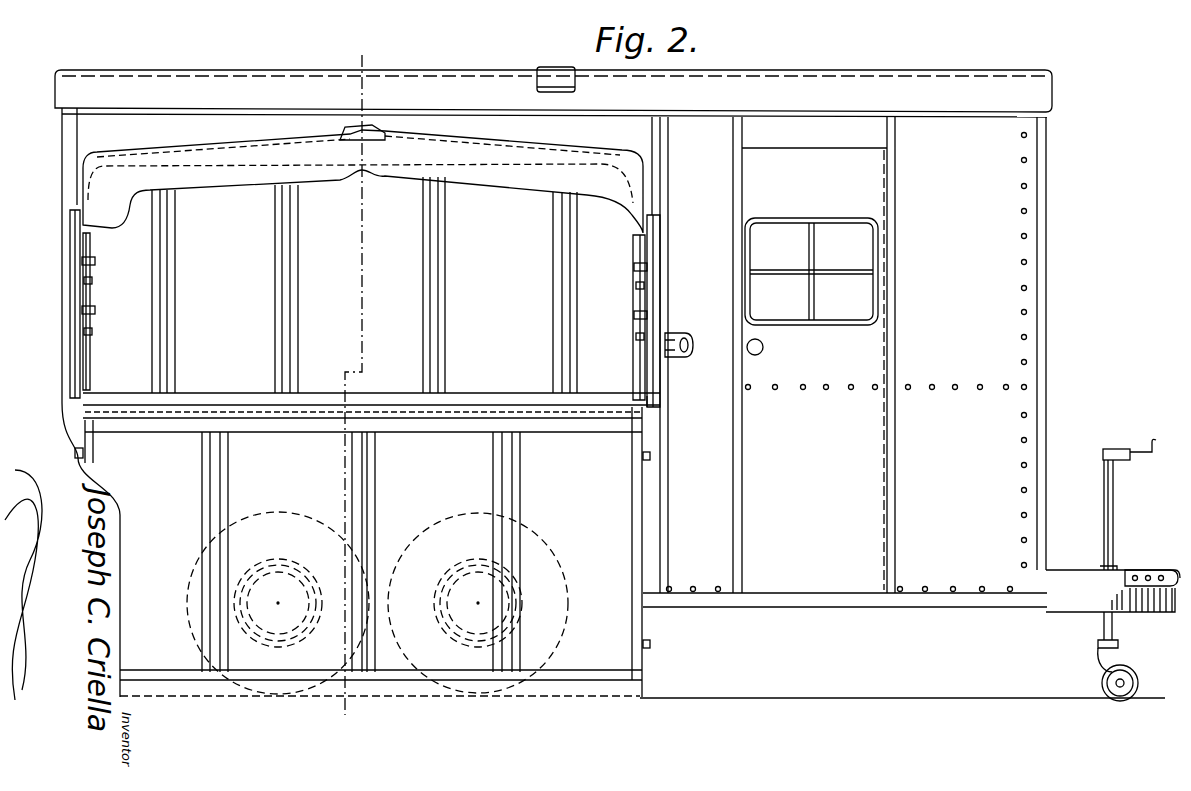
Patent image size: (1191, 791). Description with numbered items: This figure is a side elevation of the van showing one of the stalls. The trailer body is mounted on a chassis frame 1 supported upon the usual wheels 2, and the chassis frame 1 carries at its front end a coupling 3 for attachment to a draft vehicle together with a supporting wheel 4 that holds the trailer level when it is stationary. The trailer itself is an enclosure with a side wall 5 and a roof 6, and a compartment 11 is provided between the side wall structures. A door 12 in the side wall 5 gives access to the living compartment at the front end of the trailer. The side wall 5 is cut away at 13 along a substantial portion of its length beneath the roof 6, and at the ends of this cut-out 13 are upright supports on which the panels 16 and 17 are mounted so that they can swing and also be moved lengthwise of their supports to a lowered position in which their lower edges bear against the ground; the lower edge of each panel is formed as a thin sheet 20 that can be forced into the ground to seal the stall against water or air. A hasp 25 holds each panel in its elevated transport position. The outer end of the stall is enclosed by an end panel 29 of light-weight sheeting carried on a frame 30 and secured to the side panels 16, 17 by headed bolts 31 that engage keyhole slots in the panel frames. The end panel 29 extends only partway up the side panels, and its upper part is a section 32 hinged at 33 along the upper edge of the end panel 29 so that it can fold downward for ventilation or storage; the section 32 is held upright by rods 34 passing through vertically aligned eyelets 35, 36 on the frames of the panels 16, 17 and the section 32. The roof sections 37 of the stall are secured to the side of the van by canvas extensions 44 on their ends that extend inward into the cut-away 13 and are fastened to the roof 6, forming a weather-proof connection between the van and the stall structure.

The chassis frame 1 is at (756, 600).
The wheels 2 is at (190, 628).
The coupling 3 is at (1172, 560).
The supporting wheel 4 is at (1100, 682).
The side wall 5 is at (934, 578).
The roof 6 is at (1041, 74).
The compartment 11 is at (368, 64).
The door 12 is at (826, 585).
The cut-out 13 is at (662, 198).
The panel 16 is at (60, 393).
The panel 17 is at (660, 396).
The thin sheet 20 is at (606, 690).
The hasp 25 is at (690, 334).
The end panel 29 is at (131, 494).
The frame 30 is at (188, 425).
The headed bolts 31 is at (75, 453).
The section 32 is at (185, 300).
The hinge 33 is at (138, 420).
The rods 34 is at (80, 361).
The eyelets 35 is at (84, 281).
The eyelets 36 is at (93, 262).
The roof sections 37 is at (203, 153).
The canvas extensions 44 is at (284, 116).